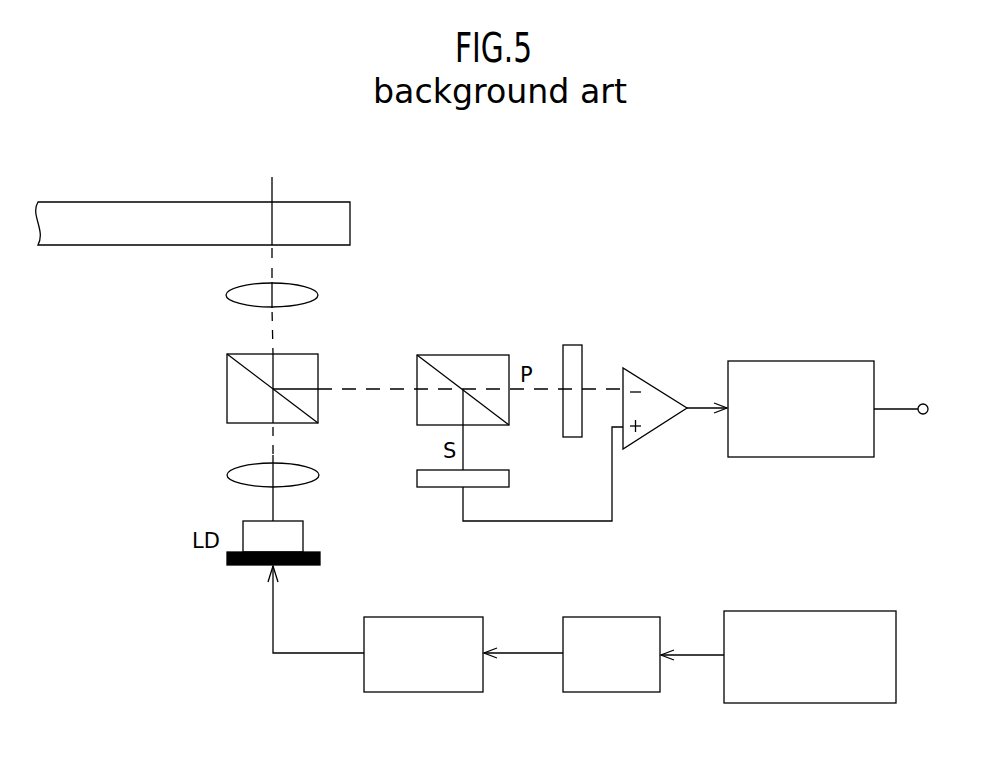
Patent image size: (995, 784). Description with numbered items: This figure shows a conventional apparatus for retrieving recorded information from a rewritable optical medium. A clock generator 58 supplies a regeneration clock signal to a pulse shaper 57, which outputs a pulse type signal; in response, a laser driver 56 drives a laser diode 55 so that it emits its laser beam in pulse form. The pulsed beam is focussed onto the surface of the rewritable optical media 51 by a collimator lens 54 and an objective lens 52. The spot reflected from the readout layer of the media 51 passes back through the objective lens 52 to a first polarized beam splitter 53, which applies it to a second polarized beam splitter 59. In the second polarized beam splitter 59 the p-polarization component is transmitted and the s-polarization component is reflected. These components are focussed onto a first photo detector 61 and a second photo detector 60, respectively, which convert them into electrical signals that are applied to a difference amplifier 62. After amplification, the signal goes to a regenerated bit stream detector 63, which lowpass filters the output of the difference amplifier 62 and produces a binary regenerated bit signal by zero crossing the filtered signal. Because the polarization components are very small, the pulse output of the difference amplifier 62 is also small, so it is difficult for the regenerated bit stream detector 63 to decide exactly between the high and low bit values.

The rewritable optical media 51 is at (92, 237).
The objective lens 52 is at (228, 296).
The first polarized beam splitter 53 is at (237, 397).
The collimator lens 54 is at (237, 477).
The laser diode 55 is at (322, 558).
The laser driver 56 is at (424, 692).
The pulse shaper 57 is at (612, 692).
The clock generator 58 is at (797, 703).
The second polarized beam splitter 59 is at (463, 355).
The second photo detector 60 is at (509, 478).
The first photo detector 61 is at (570, 345).
The difference amplifier 62 is at (640, 440).
The regenerated bit stream detector 63 is at (790, 457).